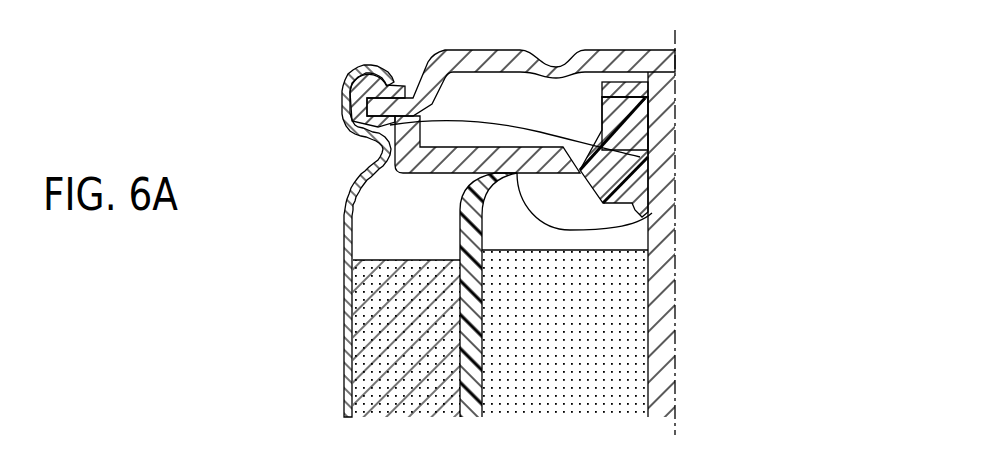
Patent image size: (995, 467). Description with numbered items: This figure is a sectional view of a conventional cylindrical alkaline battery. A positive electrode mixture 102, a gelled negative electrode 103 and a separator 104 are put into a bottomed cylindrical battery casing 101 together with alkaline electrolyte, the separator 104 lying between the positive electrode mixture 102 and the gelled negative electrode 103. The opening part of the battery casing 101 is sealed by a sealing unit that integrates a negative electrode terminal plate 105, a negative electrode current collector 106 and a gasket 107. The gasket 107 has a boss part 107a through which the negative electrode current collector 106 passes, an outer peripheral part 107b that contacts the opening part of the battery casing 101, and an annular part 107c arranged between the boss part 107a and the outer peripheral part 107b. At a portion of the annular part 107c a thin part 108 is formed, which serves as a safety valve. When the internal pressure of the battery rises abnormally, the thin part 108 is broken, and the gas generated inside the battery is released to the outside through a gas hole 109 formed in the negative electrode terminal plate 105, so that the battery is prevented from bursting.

The battery casing 101 is at (343, 198).
The positive electrode mixture 102 is at (380, 342).
The gelled negative electrode 103 is at (627, 370).
The separator 104 is at (467, 243).
The negative electrode terminal plate 105 is at (615, 58).
The negative electrode current collector 106 is at (670, 310).
The gasket 107 is at (720, 149).
The boss part 107a is at (635, 128).
The outer peripheral part 107b is at (638, 152).
The annular part 107c is at (643, 217).
The thin part 108 is at (578, 172).
The gas hole 109 is at (440, 72).